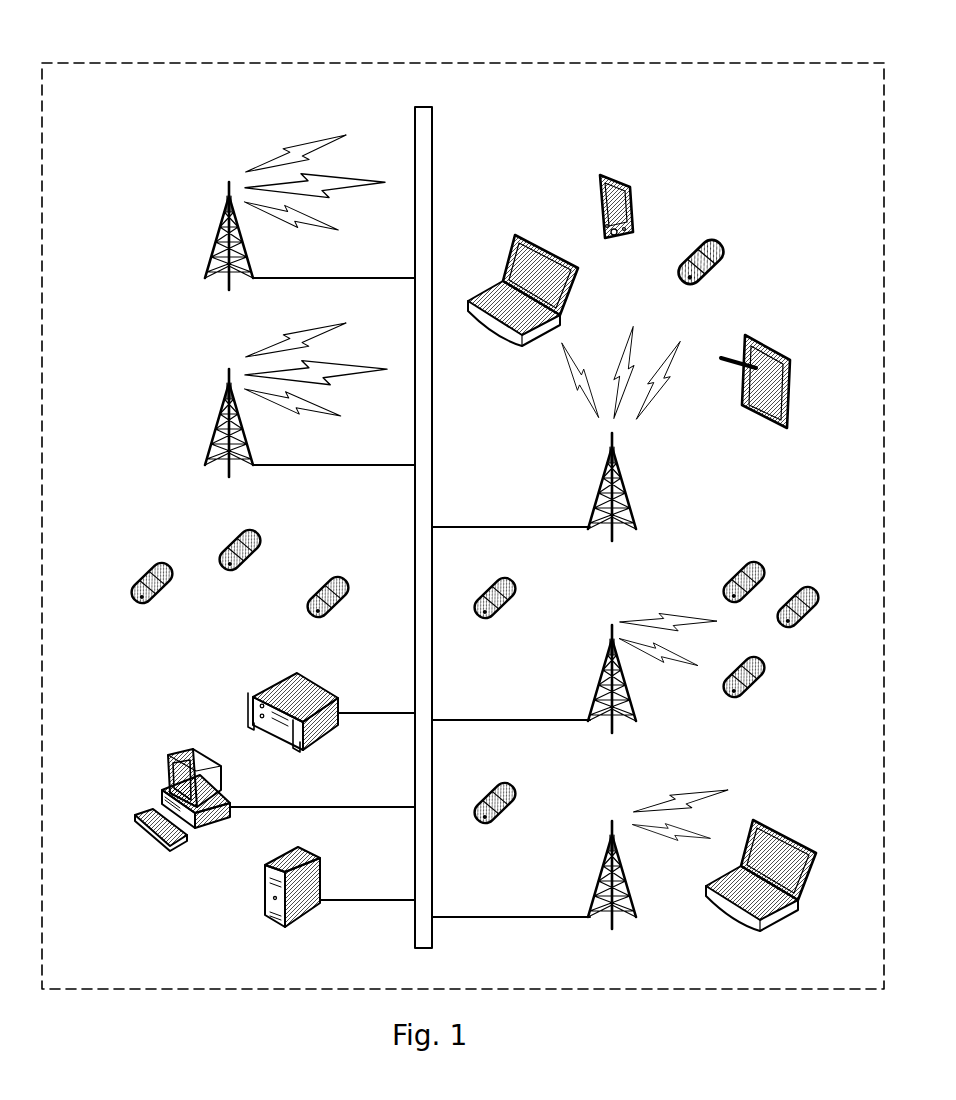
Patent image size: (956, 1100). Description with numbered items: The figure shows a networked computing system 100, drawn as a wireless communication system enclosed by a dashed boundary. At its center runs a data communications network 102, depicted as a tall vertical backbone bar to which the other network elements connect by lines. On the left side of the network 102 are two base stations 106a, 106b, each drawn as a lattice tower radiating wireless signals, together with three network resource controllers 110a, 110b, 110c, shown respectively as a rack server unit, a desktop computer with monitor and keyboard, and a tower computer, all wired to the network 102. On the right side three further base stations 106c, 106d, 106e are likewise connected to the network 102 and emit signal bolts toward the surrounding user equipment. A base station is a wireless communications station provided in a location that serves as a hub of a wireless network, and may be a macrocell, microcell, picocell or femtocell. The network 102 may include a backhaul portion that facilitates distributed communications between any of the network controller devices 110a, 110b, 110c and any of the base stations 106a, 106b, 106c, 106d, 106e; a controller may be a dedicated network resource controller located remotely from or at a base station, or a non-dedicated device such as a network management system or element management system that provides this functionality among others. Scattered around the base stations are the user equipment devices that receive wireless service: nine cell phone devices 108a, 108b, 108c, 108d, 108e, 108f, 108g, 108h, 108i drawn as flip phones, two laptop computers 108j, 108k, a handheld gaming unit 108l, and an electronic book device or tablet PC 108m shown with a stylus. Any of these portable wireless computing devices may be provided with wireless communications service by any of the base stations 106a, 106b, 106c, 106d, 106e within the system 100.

The networked computing system 100 is at (325, 28).
The data communications network 102 is at (415, 120).
The base station 106a is at (218, 233).
The base station 106b is at (218, 421).
The base station 106c is at (598, 870).
The base station 106d is at (598, 680).
The base station 106e is at (630, 494).
The cell phone device 108a is at (140, 577).
The cell phone device 108b is at (235, 533).
The cell phone device 108c is at (310, 620).
The cell phone device 108d is at (520, 782).
The cell phone device 108e is at (757, 700).
The cell phone device 108f is at (820, 624).
The cell phone device 108g is at (768, 558).
The cell phone device 108h is at (520, 578).
The cell phone device 108i is at (730, 246).
The laptop computer 108j is at (785, 830).
The laptop computer 108k is at (517, 232).
The handheld gaming unit 108l is at (636, 194).
The electronic book device or tablet PC 108m is at (790, 346).
The network resource controller 110a is at (245, 712).
The network resource controller 110b is at (163, 755).
The network resource controller 110c is at (263, 905).